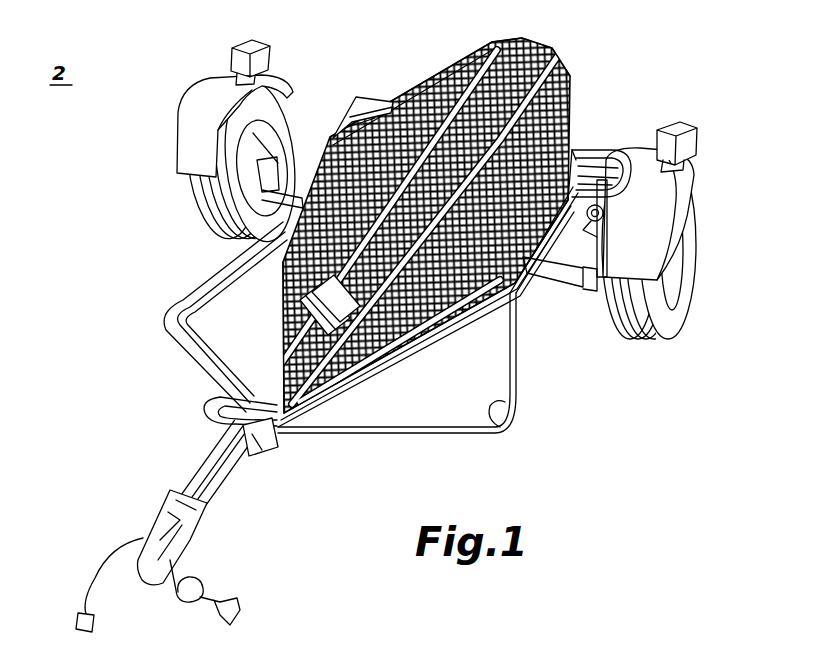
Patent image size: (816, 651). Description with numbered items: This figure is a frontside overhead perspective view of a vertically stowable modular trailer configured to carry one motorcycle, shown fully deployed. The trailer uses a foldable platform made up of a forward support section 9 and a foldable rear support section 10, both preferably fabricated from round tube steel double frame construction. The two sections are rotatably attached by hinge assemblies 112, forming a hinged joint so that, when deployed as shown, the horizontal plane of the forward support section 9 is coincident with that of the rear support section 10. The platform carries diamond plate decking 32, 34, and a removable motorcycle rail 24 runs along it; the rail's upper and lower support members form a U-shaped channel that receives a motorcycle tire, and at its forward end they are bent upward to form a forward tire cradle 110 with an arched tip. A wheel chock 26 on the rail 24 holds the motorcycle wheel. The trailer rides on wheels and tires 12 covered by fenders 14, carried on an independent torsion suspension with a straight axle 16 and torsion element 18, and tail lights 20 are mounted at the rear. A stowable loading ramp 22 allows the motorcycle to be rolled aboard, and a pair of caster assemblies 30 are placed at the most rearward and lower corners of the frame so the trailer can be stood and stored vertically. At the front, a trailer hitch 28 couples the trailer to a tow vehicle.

The foldable rear support section 10 is at (583, 40).
The wheels and tires 12 is at (192, 205).
The fenders 14 is at (208, 103).
The straight axle 16 is at (573, 283).
The independent torsion suspension 18 is at (303, 186).
The tail lights 20 is at (246, 42).
The stowable loading ramp 22 is at (606, 150).
The removable motorcycle rails 24 is at (272, 448).
The wheel chock 26 is at (296, 340).
The trailer hitch 28 is at (196, 526).
The casters 30 is at (565, 283).
The diamond plate decking 32 is at (418, 232).
The forward support section 9 is at (436, 330).
The diamond plate decking 34 is at (524, 44).
The forward tire cradle 110 is at (205, 404).
The hinge assemblies 112 is at (372, 108).